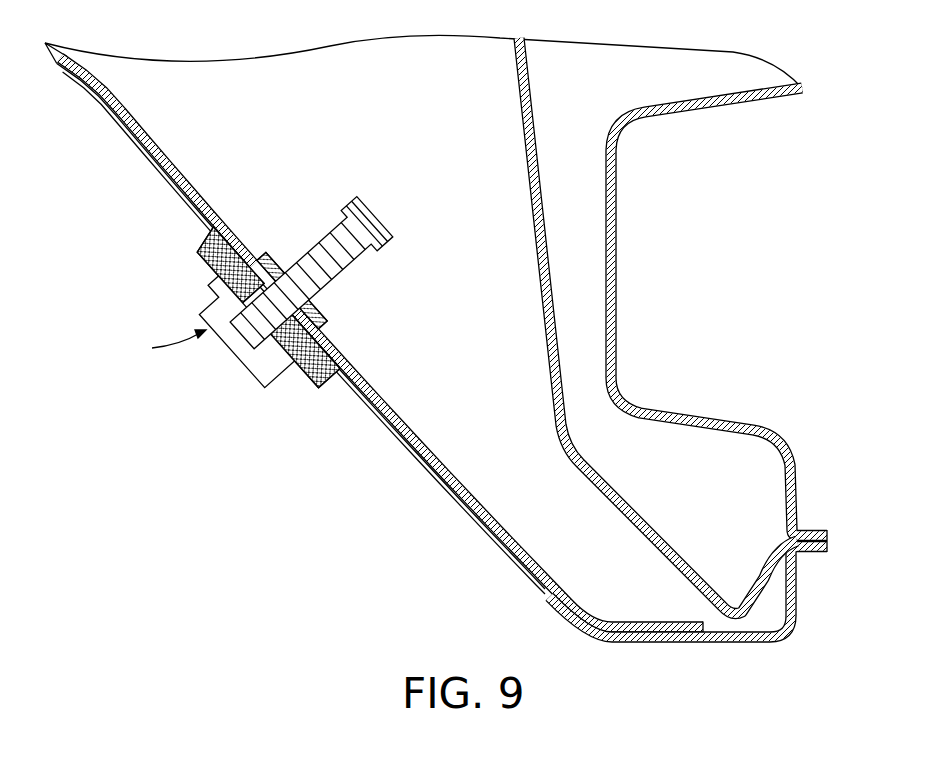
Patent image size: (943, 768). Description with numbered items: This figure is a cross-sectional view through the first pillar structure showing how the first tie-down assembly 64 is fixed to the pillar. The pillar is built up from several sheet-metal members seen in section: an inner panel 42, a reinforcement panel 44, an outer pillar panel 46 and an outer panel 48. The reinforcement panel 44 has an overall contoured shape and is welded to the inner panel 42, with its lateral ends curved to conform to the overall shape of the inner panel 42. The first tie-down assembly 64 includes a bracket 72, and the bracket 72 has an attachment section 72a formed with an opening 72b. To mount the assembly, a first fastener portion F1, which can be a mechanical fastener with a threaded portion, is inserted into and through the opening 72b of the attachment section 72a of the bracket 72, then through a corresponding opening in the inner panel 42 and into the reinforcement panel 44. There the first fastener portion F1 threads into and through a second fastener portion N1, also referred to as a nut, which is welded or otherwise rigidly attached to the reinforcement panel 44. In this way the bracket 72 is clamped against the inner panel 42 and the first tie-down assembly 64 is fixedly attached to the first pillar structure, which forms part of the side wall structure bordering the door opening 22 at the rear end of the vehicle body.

The door opening 22 is at (722, 643).
The inner panel 42 is at (133, 143).
The reinforcement panel 44 is at (176, 162).
The outer pillar panel 46 is at (535, 104).
The outer panel 48 is at (617, 245).
The first tie-down assembly 64 is at (163, 345).
The bracket 72 is at (327, 380).
The attachment section 72a is at (285, 351).
The opening 72b is at (262, 328).
The first fastener portion F1 is at (362, 216).
The second fastener portion N1 is at (266, 247).